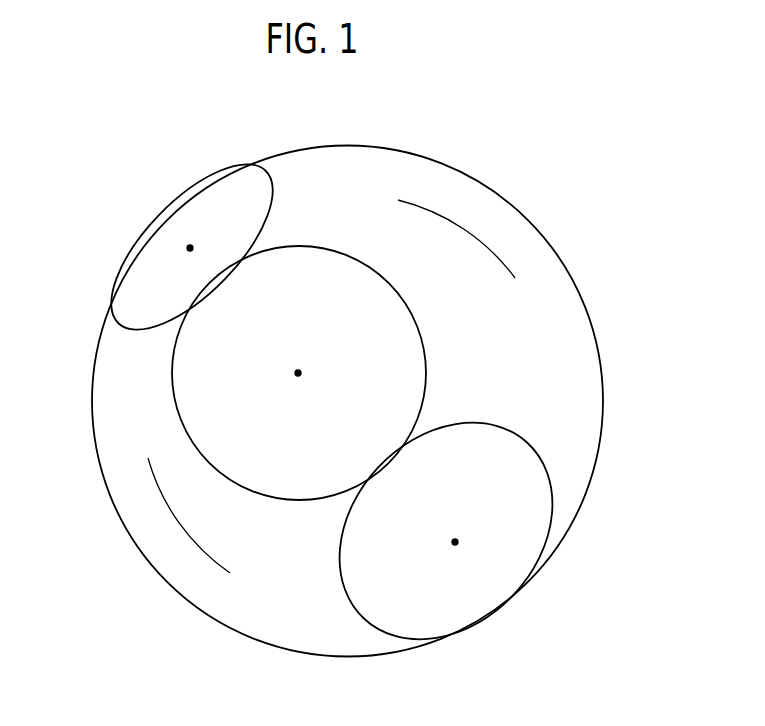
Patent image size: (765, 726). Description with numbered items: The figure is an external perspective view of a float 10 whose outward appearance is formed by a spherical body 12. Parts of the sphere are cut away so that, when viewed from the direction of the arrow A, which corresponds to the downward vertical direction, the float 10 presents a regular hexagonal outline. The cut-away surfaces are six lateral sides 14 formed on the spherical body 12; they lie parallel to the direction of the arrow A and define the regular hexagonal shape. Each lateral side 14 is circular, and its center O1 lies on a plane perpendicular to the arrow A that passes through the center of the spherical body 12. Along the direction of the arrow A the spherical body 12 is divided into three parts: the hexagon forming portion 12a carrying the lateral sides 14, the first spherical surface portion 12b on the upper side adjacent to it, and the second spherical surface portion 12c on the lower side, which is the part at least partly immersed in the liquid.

The float 10 is at (171, 119).
The spherical body 12 is at (589, 305).
The hexagon forming portion 12a is at (443, 607).
The first spherical surface portion 12b is at (529, 247).
The second spherical surface portion 12c is at (147, 513).
The lateral sides 14 is at (142, 275).
The center of lateral side O1 is at (190, 248).
The arrow A is at (528, 185).